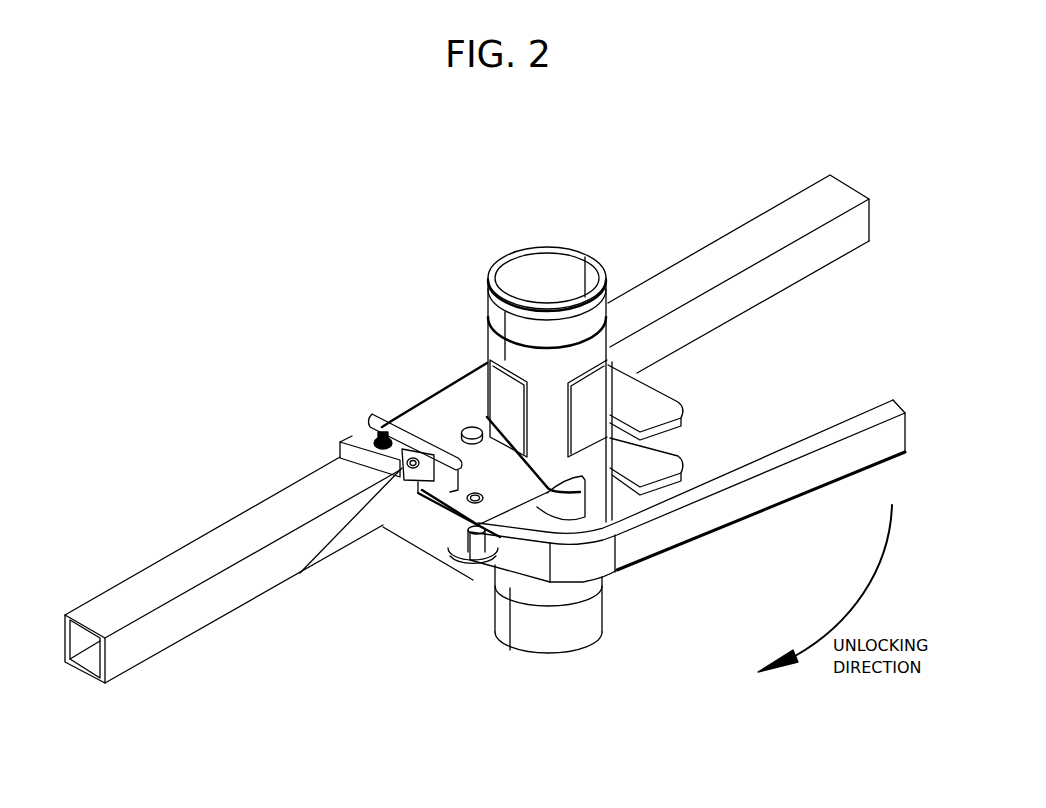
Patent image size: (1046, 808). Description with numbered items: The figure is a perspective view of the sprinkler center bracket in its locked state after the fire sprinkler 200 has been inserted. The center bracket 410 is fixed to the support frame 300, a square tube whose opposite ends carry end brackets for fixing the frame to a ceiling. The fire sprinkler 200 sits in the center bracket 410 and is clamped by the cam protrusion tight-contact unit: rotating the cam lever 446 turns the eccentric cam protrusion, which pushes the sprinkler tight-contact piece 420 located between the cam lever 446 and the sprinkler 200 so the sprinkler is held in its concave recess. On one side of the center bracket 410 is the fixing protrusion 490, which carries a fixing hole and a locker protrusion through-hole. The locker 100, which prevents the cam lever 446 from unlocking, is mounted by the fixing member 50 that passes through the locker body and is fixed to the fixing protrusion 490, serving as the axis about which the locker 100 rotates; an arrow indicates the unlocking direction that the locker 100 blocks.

The locker 100 is at (572, 477).
The support frame 300 is at (262, 525).
The center bracket 410 is at (445, 420).
The sprinkler tight-contact piece 420 is at (570, 500).
The fixing member 50 is at (377, 440).
The fixing protrusion 490 is at (402, 468).
The cam lever 446 is at (738, 507).
The fire sprinkler 200 is at (568, 637).